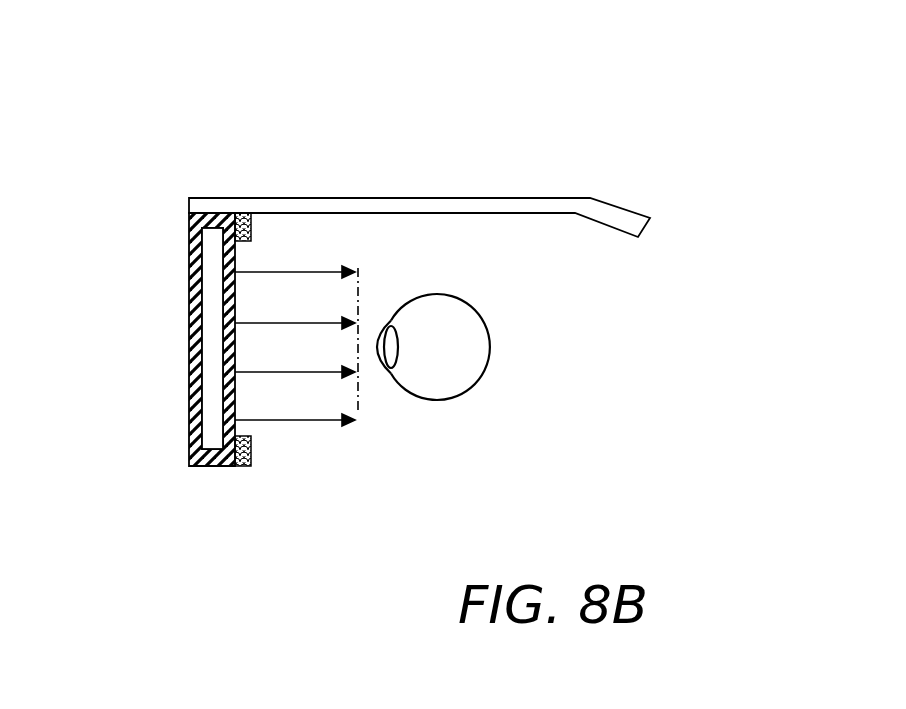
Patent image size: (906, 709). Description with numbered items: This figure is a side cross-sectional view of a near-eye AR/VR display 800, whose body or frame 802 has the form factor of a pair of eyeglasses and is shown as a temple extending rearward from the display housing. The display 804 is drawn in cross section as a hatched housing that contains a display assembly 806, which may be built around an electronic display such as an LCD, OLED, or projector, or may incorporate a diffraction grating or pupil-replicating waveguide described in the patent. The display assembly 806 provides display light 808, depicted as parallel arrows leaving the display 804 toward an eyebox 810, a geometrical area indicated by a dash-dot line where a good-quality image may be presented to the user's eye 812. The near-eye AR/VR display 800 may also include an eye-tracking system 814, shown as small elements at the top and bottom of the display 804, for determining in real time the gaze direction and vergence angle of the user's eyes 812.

The near-eye AR/VR display 800 is at (235, 142).
The body or frame 802 is at (545, 205).
The display 804 is at (190, 228).
The display assembly 806 is at (213, 313).
The display light 808 is at (312, 437).
The eyebox 810 is at (360, 409).
The user's eye 812 is at (478, 356).
The eye-tracking system 814 is at (252, 222).